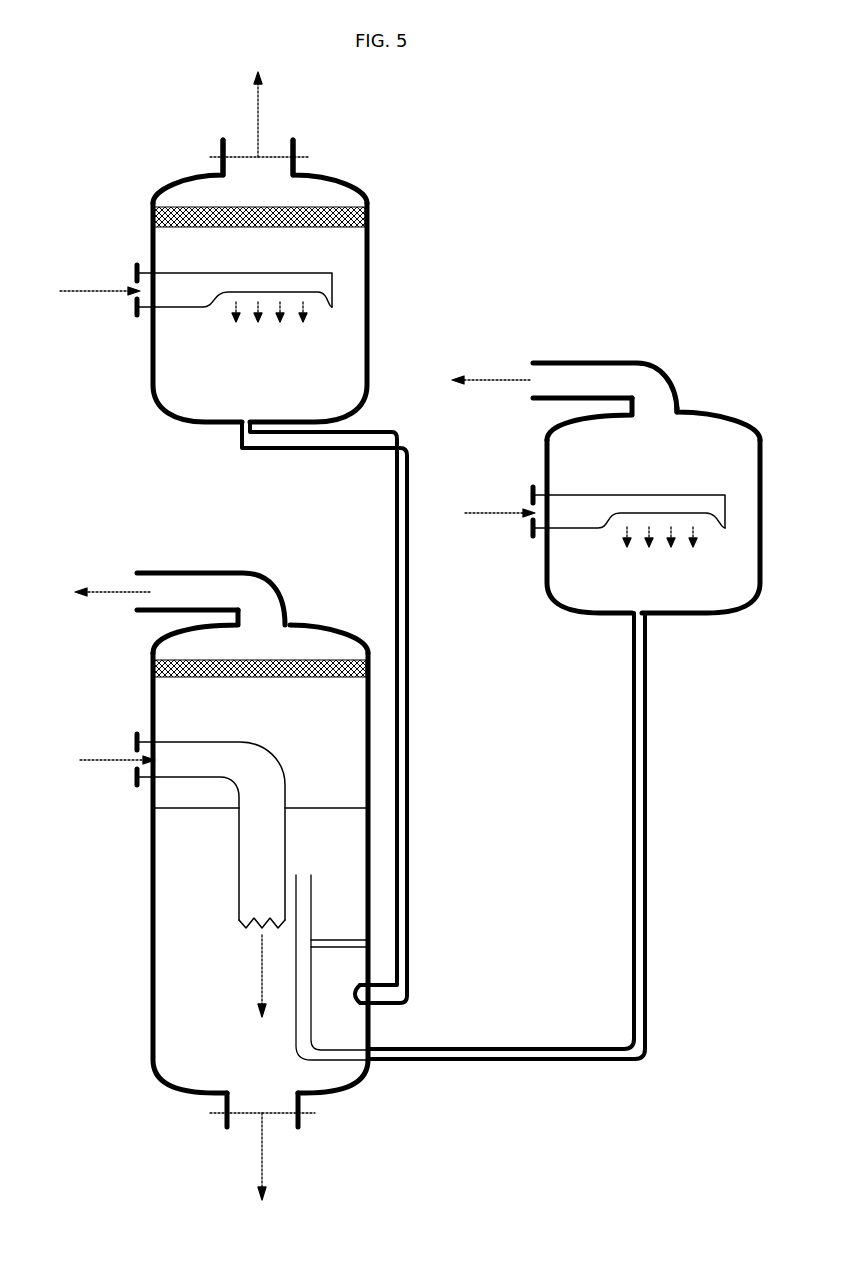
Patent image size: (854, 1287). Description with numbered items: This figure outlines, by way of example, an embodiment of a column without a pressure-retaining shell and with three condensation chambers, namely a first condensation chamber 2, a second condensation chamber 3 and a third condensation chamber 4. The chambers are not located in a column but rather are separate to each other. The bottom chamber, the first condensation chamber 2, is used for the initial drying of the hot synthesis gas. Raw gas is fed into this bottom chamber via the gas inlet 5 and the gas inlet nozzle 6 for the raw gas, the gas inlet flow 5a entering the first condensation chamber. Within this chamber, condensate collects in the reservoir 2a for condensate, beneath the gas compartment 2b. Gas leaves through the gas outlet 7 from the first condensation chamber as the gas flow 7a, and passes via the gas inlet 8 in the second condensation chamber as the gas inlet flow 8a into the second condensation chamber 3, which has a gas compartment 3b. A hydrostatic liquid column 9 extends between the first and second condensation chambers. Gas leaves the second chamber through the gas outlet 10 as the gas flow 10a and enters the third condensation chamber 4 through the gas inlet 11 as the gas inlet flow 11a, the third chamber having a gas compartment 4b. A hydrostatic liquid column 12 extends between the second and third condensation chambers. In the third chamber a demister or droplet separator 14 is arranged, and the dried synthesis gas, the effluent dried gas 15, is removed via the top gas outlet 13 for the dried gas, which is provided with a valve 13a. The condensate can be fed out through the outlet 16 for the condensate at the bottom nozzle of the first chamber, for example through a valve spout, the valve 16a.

The first condensation chamber 2 is at (167, 886).
The reservoir for condensate in the first condensation chamber 2a is at (260, 829).
The gas compartment in the first condensation chamber 2b is at (260, 671).
The second condensation chamber 3 is at (567, 446).
The gas compartment in the second condensation chamber 3b is at (653, 434).
The third condensation chamber 4 is at (165, 350).
The gas compartment in the third condensation chamber 4b is at (260, 201).
The gas inlet in the first condensation chamber 5 is at (84, 754).
The gas inlet flow in the first condensation chamber 5a is at (252, 976).
The gas inlet nozzle for the raw gas 6 is at (234, 894).
The gas outlet from the first condensation chamber 7 is at (102, 582).
The gas flow from the first condensation chamber 7a is at (211, 599).
The gas inlet in the second condensation chamber 8 is at (487, 496).
The gas inlet flow in the second condensation chamber 8a is at (660, 552).
The hydrostatic liquid column between the first and second condensation chambers 9 is at (655, 1057).
The gas outlet from the second condensation chamber 10 is at (484, 366).
The gas flow from the second condensation chamber 10a is at (605, 387).
The gas inlet in the third condensation chamber 11 is at (97, 279).
The gas inlet flow in the third condensation chamber 11a is at (269, 329).
The hydrostatic liquid column between the second and third condensation chambers 12 is at (410, 1005).
The gas outlet for the dried gas 13 is at (299, 151).
The valve 13a is at (212, 154).
The demister or droplet separator 14 is at (273, 228).
The effluent dried gas 15 is at (245, 104).
The outlet for the condensate 16 is at (275, 1165).
The valve 16a is at (212, 1112).